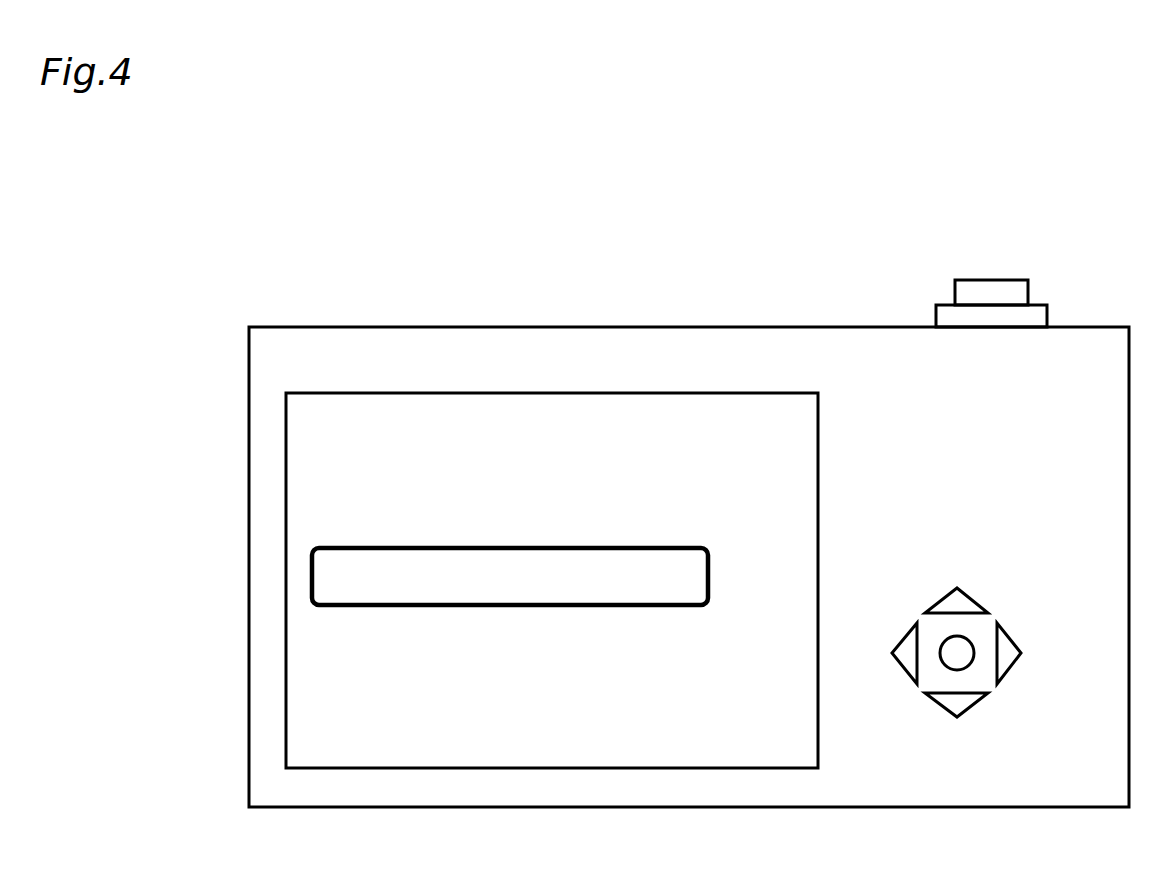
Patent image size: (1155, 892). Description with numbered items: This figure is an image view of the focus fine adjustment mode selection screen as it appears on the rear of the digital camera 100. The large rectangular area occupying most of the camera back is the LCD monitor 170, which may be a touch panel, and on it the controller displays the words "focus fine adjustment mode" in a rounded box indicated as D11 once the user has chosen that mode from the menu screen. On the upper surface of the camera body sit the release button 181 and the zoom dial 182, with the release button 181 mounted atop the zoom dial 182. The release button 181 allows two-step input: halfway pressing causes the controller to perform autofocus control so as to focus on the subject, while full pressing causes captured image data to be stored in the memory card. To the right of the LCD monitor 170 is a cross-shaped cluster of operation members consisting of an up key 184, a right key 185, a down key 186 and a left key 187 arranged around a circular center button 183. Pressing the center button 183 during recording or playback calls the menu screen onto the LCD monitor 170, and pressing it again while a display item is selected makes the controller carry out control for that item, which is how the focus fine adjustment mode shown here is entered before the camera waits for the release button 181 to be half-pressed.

The digital camera 100 is at (207, 167).
The LCD monitor 170 is at (417, 698).
The focus fine adjustment mode display D11 is at (312, 581).
The release button 181 is at (1002, 280).
The zoom dial 182 is at (1047, 305).
The center button 183 is at (958, 657).
The up key 184 is at (959, 601).
The right key 185 is at (1015, 658).
The down key 186 is at (958, 703).
The left key 187 is at (904, 657).